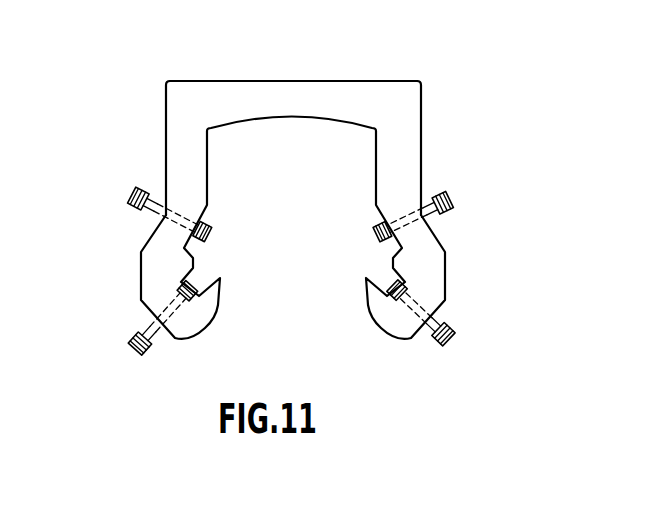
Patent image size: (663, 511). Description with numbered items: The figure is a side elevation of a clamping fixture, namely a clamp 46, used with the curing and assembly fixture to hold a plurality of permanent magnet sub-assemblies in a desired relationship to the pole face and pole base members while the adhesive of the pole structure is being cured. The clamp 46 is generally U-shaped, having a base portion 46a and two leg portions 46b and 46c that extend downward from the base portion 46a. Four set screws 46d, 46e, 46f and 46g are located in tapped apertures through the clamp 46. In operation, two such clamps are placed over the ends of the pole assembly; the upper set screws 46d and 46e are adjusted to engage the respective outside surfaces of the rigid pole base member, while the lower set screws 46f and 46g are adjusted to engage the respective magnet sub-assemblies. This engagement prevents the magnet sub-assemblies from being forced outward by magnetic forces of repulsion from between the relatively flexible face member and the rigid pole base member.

The clamp 46 is at (304, 177).
The base portion 46a is at (280, 79).
The leg portion 46b is at (165, 166).
The leg portion 46c is at (422, 157).
The set screw 46d is at (133, 202).
The set screw 46e is at (448, 201).
The set screw 46f is at (135, 341).
The set screw 46g is at (450, 337).